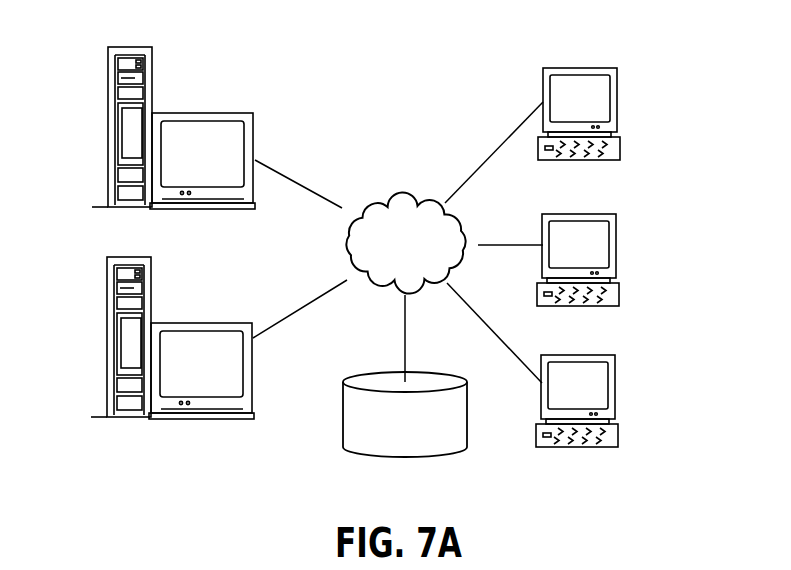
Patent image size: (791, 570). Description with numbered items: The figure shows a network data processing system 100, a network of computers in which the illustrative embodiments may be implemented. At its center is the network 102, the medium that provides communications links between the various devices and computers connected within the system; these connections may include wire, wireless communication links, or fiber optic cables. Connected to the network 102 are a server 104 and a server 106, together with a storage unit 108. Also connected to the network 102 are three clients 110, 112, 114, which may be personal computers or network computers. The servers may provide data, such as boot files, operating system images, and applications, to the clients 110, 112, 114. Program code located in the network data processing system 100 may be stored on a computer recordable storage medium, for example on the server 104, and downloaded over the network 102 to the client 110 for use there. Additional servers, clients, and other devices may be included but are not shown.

The network data processing system 100 is at (457, 87).
The network 102 is at (383, 196).
The server 104 is at (108, 127).
The server 106 is at (106, 338).
The storage unit 108 is at (343, 421).
The client 110 is at (617, 102).
The client 112 is at (615, 247).
The client 114 is at (613, 391).